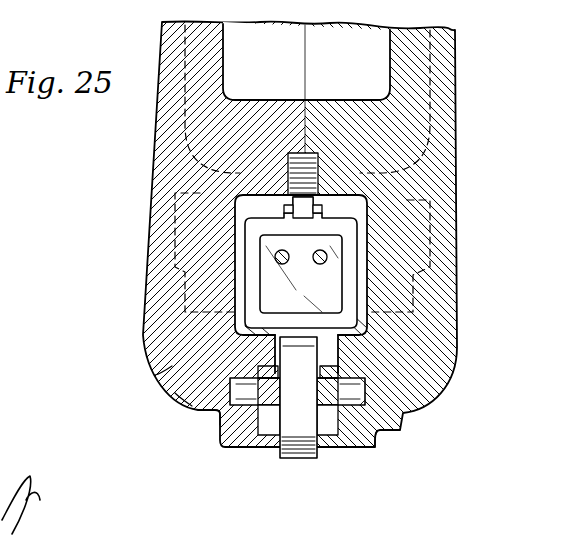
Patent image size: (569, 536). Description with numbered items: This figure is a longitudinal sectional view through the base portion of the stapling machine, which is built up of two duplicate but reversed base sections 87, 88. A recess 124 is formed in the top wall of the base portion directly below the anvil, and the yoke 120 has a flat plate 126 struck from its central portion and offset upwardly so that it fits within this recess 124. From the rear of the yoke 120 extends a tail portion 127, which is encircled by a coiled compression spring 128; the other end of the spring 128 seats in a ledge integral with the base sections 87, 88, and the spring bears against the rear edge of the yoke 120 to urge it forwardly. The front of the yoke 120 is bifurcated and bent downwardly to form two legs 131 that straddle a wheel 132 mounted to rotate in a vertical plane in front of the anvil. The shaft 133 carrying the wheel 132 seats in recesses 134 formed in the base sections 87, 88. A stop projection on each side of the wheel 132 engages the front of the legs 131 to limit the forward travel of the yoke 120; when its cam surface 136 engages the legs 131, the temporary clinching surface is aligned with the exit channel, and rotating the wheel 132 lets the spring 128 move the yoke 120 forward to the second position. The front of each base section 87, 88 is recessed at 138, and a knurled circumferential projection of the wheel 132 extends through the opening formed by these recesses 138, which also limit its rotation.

The base section 88 is at (458, 322).
The base section 87 is at (186, 391).
The yoke 120 is at (248, 280).
The recess 124 is at (360, 207).
The flat plate 126 is at (330, 296).
The tail portion 127 is at (290, 207).
The coiled compression spring 128 is at (319, 161).
The legs 131 is at (178, 372).
The wheel 132 is at (305, 452).
The shaft 133 is at (229, 448).
The recesses 134 is at (206, 411).
The cam surface 136 is at (377, 444).
The recess 138 is at (268, 450).